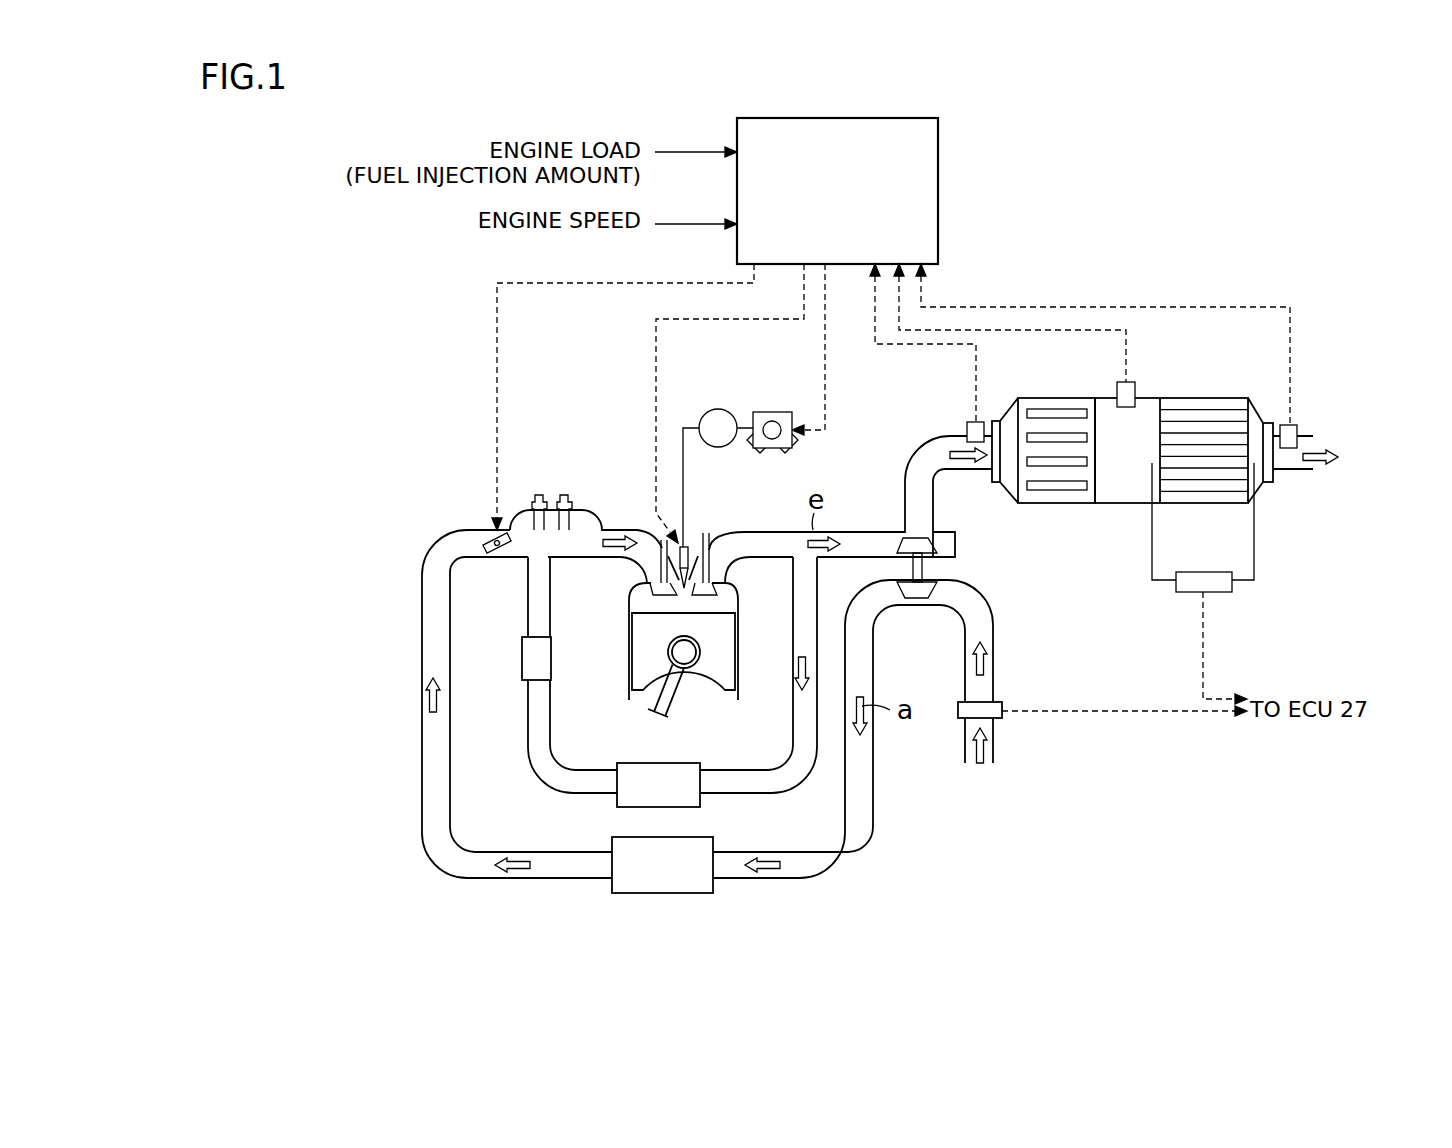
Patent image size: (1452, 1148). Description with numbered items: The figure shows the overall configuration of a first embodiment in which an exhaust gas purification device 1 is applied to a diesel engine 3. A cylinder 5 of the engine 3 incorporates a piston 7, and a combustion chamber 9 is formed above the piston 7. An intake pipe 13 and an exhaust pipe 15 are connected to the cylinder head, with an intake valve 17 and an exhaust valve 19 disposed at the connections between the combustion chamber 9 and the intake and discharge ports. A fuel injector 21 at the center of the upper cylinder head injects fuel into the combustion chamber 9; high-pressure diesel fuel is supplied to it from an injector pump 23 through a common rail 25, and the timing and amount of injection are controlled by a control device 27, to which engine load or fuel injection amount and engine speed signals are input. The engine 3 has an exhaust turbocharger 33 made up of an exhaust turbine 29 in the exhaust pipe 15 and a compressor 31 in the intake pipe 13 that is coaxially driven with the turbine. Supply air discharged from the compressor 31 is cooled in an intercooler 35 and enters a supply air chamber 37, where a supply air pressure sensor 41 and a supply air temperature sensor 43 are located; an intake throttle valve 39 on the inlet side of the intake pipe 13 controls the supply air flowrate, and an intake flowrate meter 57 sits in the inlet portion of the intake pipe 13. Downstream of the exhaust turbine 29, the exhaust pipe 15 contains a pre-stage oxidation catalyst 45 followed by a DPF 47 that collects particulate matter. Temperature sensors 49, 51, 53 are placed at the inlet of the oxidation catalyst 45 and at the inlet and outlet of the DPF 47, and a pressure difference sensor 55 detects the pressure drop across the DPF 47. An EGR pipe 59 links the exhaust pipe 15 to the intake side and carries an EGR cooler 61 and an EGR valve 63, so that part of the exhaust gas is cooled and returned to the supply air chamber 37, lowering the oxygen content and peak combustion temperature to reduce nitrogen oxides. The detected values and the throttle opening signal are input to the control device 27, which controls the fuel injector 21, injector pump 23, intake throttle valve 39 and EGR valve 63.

The exhaust gas purification device 1 is at (1047, 256).
The engine 3 is at (627, 440).
The cylinder 5 is at (740, 590).
The piston 7 is at (725, 645).
The combustion chamber 9 is at (647, 605).
The intake pipe 13 is at (422, 677).
The exhaust pipe 15 is at (914, 445).
The intake valve 17 is at (660, 547).
The exhaust valve 19 is at (712, 535).
The fuel injector 21 is at (690, 547).
The injector pump 23 is at (772, 411).
The common rail 25 is at (718, 408).
The control device 27 is at (940, 180).
The exhaust turbine 29 is at (945, 545).
The compressor 31 is at (940, 592).
The exhaust turbocharger 33 is at (952, 568).
The intercooler 35 is at (652, 895).
The supply air chamber 37 is at (565, 548).
The intake throttle valve 39 is at (495, 553).
The supply air pressure sensor 41 is at (535, 493).
The supply air temperature sensor 43 is at (566, 493).
The pre-stage oxidation catalyst 45 is at (1062, 505).
The DPF 47 is at (1195, 505).
The temperature sensor 49 is at (984, 420).
The temperature sensor 51 is at (1133, 383).
The temperature sensor 53 is at (1297, 425).
The pressure difference sensor 55 is at (1182, 595).
The intake flowrate meter 57 is at (1002, 702).
The EGR pipe 59 is at (735, 770).
The EGR cooler 61 is at (680, 762).
The EGR valve 63 is at (552, 660).